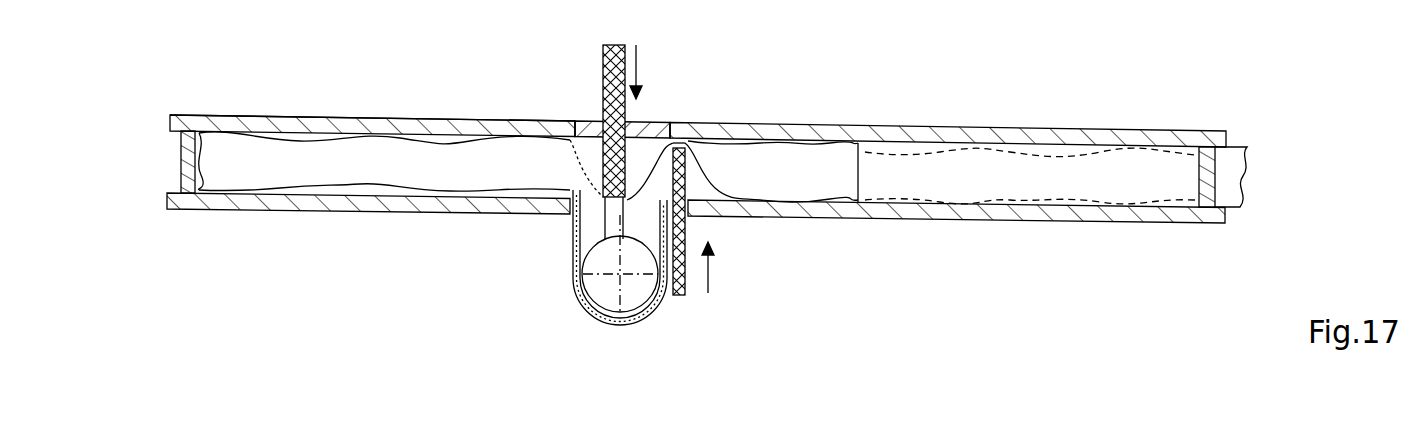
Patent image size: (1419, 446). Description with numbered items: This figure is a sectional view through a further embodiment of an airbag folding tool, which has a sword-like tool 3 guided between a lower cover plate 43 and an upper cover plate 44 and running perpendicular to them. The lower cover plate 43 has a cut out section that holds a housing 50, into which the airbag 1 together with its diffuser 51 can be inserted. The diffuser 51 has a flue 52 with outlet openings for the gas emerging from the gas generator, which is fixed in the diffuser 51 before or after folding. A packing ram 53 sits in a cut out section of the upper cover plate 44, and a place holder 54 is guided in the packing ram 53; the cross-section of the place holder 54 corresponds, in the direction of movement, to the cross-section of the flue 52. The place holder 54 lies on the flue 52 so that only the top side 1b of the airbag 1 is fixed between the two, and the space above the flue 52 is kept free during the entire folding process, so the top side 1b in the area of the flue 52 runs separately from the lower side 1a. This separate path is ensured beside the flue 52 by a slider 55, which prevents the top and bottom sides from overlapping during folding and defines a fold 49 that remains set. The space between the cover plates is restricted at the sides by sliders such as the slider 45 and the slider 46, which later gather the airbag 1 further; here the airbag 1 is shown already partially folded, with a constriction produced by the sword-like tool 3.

The airbag 1 is at (313, 163).
The lower side of the airbag 1a is at (335, 185).
The top side of the airbag 1b is at (458, 147).
The sword-like tool 3 is at (1227, 170).
The lower cover plate 43 is at (1147, 215).
The upper cover plate 44 is at (1055, 133).
The slider 45 is at (186, 182).
The slider 46 is at (1203, 187).
The fold 49 is at (688, 138).
The housing 50 is at (637, 322).
The diffuser 51 is at (594, 310).
The flue 52 is at (608, 227).
The packing ram 53 is at (660, 128).
The place holder 54 is at (607, 78).
The slider 55 is at (680, 293).